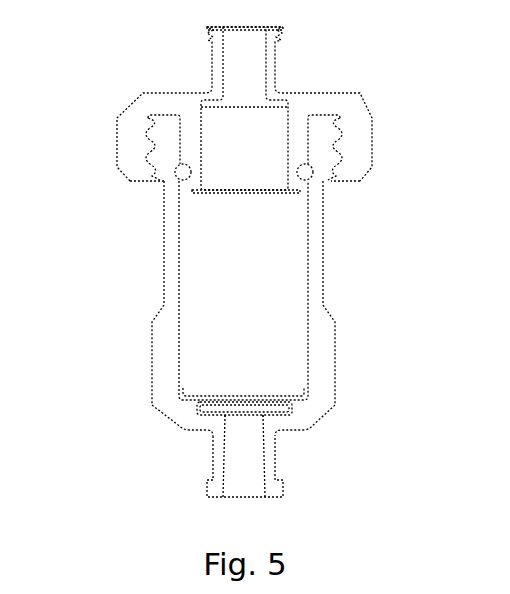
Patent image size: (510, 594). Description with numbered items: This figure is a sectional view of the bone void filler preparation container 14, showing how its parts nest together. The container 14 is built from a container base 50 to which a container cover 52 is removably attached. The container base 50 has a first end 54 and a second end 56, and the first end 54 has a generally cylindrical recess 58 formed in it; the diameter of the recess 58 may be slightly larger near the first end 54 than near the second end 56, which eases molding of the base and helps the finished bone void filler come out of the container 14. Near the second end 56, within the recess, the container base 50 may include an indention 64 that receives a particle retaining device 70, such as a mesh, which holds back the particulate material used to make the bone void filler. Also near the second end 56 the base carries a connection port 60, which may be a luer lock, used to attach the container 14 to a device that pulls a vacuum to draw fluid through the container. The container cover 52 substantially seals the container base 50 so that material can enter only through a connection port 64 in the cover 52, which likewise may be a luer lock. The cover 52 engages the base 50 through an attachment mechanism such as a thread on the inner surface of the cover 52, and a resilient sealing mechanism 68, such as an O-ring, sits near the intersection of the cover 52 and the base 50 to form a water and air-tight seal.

The bone void filler preparation container 14 is at (105, 260).
The container base 50 is at (164, 331).
The container cover 52 is at (340, 105).
The first end 54 is at (323, 120).
The second end 56 is at (313, 415).
The recess 58 is at (274, 270).
The connection port 60 is at (210, 481).
The indention / connection port 64 is at (212, 27).
The resilient sealing mechanism 68 is at (176, 172).
The particle retaining device 70 is at (248, 397).